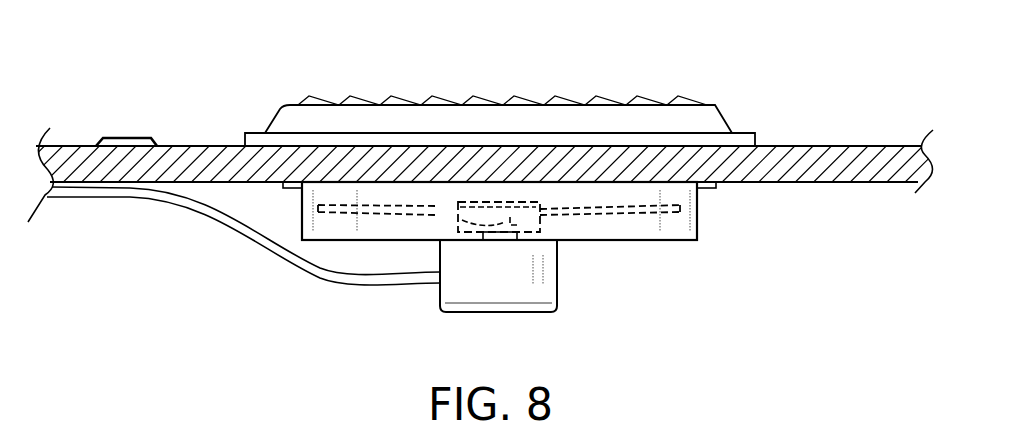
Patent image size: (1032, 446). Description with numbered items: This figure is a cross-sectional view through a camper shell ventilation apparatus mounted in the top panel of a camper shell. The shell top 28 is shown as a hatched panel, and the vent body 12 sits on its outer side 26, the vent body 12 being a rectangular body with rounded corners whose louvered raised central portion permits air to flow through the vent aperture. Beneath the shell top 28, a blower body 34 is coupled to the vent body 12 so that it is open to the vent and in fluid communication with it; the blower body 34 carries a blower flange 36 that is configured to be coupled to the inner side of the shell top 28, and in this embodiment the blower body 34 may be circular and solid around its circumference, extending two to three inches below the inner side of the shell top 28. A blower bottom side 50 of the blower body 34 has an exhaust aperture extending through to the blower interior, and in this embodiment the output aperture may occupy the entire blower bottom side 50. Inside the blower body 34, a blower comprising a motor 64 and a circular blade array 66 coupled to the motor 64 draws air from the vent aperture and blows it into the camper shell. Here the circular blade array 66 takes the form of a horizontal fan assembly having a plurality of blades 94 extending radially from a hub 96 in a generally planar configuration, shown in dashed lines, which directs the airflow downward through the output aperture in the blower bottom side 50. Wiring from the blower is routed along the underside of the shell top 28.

The vent body 12 is at (715, 105).
The outer side 26 is at (127, 138).
The shell top 28 is at (215, 162).
The blower body 34 is at (697, 213).
The blower flange 36 is at (697, 187).
The blower bottom side 50 is at (658, 240).
The motor 64 is at (505, 285).
The circular blade array 66 is at (440, 212).
The blades 94 is at (540, 225).
The hub 96 is at (618, 208).